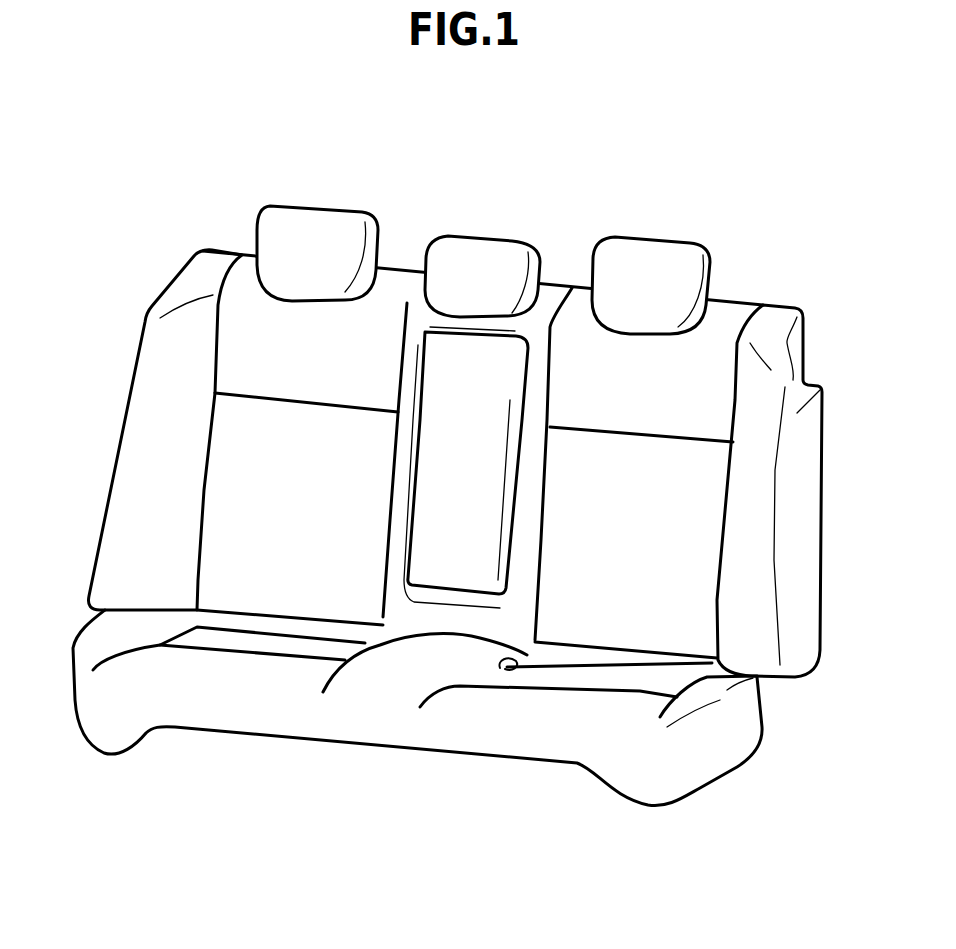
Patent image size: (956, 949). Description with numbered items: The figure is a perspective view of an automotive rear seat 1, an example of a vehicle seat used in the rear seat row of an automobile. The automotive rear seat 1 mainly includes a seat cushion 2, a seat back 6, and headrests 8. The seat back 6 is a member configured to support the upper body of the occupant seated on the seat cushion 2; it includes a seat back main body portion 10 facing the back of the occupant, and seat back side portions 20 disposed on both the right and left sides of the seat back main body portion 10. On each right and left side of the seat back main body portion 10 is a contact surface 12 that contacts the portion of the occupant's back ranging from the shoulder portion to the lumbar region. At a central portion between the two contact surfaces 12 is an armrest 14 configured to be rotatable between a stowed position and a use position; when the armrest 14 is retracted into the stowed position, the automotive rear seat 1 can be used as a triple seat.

The automotive rear seat 1 is at (607, 157).
The seat cushion 2 is at (337, 748).
The seat back 6 is at (242, 247).
The headrests 8 is at (347, 207).
The seat back main body portion 10 is at (385, 305).
The contact surface 12 is at (310, 510).
The armrest 14 is at (463, 543).
The seat back side portions 20 is at (173, 402).